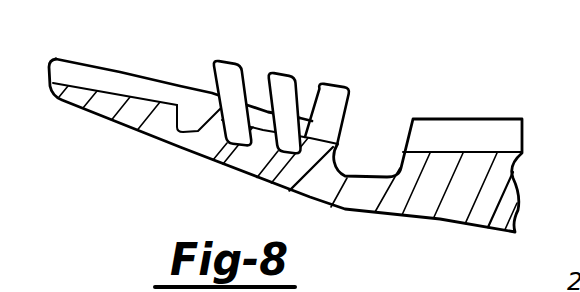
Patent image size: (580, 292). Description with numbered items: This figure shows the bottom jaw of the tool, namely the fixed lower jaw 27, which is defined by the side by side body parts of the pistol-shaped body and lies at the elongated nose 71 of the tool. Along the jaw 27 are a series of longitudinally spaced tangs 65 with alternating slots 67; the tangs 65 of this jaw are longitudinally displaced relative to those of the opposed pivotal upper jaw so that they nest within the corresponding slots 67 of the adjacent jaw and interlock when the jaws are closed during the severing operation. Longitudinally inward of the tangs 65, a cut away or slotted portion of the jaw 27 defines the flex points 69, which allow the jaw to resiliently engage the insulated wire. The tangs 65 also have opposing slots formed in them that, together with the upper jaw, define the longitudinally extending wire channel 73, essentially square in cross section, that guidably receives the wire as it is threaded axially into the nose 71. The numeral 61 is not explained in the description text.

The fixed lower jaw 27 is at (190, 165).
The lower edge portion 61 is at (94, 104).
The tangs 65 is at (283, 72).
The slots 67 is at (307, 85).
The flex points 69 is at (363, 198).
The nose 71 is at (130, 116).
The wire channel 73 is at (73, 75).